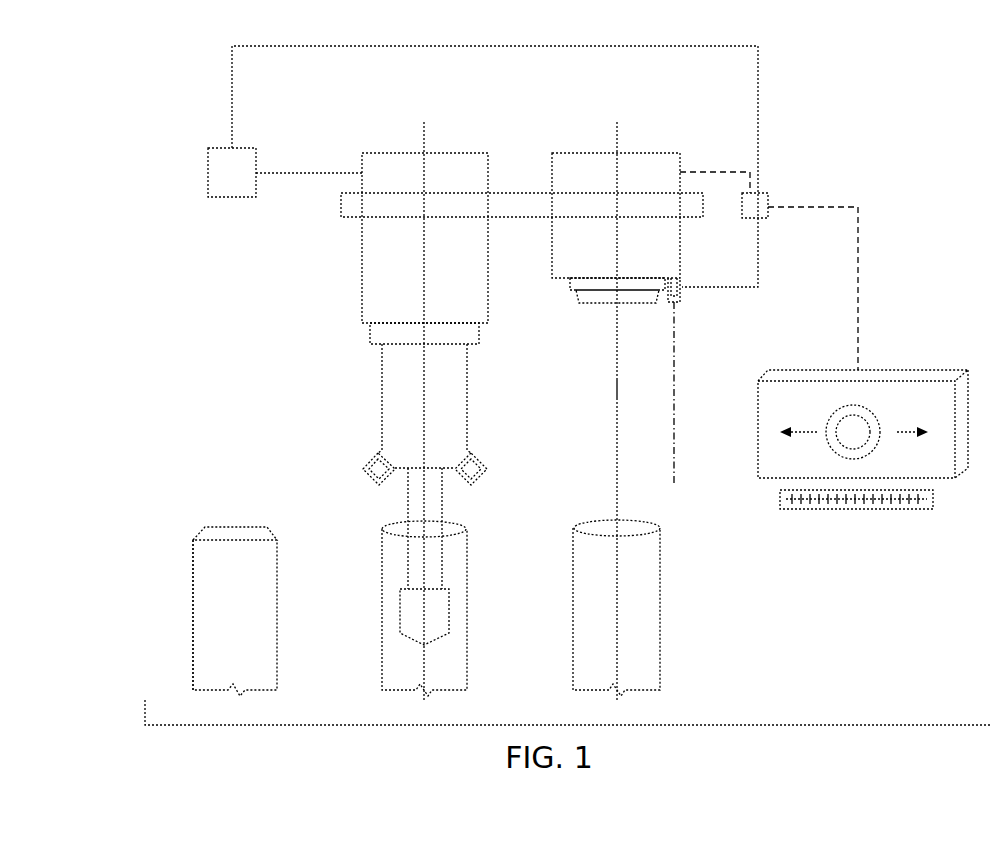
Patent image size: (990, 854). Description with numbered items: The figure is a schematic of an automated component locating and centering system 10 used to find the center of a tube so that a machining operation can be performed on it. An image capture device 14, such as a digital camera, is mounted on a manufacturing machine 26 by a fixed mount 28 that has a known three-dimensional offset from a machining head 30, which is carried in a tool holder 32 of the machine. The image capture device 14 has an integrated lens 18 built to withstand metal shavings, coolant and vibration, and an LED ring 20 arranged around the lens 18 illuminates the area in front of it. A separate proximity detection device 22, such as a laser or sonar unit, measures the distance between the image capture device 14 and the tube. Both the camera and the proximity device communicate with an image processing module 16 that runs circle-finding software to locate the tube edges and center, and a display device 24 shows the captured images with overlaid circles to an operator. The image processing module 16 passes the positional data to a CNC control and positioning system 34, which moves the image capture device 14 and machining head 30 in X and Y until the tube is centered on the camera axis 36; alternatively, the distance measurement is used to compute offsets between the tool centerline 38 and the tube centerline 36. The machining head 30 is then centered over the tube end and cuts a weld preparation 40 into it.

The system 10 is at (808, 74).
The image capture device 14 is at (652, 160).
The image processing module 16 is at (768, 207).
The integrated lens 18 is at (597, 300).
The LED ring 20 is at (570, 284).
The proximity detection device 22 is at (680, 294).
The display device 24 is at (940, 450).
The manufacturing machine 26 is at (383, 139).
The fixed mount 28 is at (522, 198).
The machining head 30 is at (449, 610).
The tool holder 32 is at (381, 376).
The control and positioning system 34 is at (216, 150).
The axis 36 is at (617, 392).
The tool centerline 38 is at (442, 500).
The weld preparation 40 is at (232, 528).